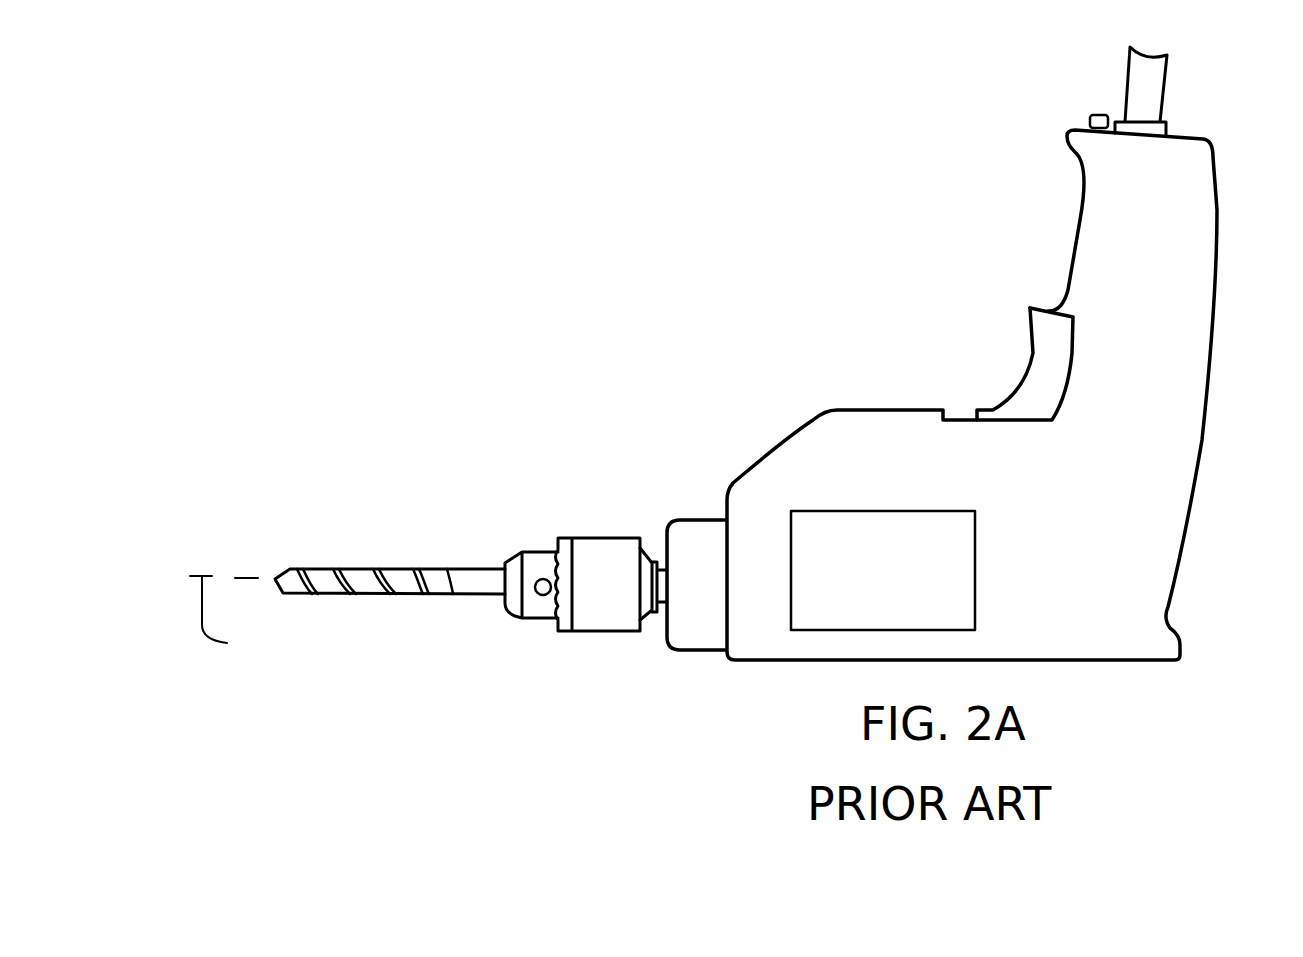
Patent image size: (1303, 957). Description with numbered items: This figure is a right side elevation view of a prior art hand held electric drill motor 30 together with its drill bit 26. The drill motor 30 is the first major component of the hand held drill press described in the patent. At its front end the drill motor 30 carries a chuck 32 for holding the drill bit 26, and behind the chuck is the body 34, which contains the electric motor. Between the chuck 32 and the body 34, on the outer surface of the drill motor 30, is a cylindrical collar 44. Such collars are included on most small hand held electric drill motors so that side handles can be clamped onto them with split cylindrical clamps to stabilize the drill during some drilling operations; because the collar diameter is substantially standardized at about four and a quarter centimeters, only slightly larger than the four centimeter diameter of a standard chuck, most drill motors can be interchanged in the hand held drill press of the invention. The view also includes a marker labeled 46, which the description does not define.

The drill bit 26 is at (307, 570).
The drill motor 30 is at (740, 314).
The chuck 32 is at (537, 622).
The body 34 is at (807, 660).
The cylindrical collar 44 is at (702, 520).
The axis of rotation centerline 46 is at (231, 620).